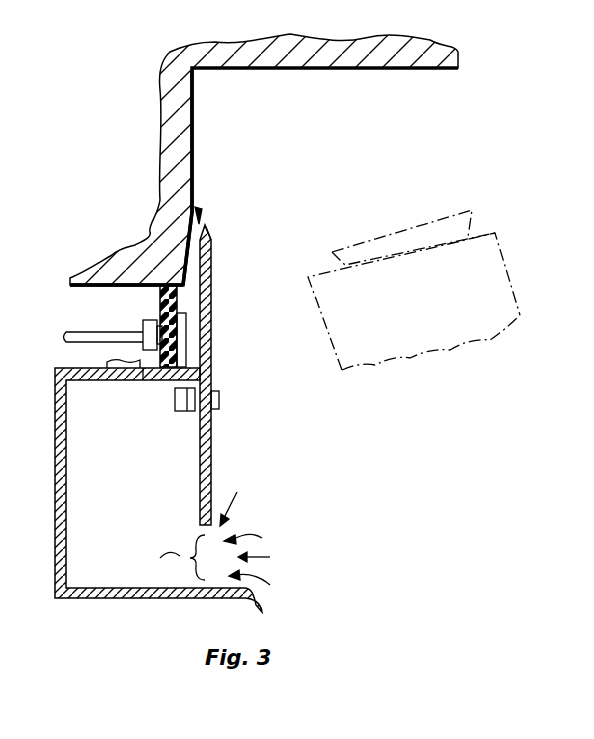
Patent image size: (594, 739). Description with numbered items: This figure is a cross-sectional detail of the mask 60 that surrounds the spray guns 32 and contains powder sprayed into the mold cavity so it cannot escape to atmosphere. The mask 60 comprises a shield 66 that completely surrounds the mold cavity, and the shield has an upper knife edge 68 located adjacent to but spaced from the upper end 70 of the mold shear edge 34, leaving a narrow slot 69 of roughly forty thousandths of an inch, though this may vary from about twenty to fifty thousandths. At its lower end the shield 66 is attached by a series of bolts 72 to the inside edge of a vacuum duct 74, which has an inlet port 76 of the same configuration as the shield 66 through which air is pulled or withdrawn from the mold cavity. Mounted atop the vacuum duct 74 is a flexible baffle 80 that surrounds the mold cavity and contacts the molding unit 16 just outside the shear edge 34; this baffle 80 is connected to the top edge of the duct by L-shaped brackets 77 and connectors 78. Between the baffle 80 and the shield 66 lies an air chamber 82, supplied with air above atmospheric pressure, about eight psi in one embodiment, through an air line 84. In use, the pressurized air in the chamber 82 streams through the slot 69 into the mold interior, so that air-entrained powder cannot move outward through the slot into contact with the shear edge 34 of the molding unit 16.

The molding unit 16 is at (455, 49).
The spray guns 32 is at (520, 233).
The mold shear edge 34 is at (188, 262).
The mask 60 is at (60, 650).
The shield 66 is at (213, 338).
The knife edge 68 is at (203, 223).
The slot 69 is at (200, 218).
The upper end of the mold shear edge 70 is at (187, 212).
The bolts 72 is at (220, 402).
The vacuum duct 74 is at (137, 516).
The inlet port 76 is at (211, 540).
The L-shaped brackets 77 is at (146, 381).
The connectors 78 is at (113, 381).
The flexible baffle 80 is at (179, 301).
The air chamber 82 is at (188, 323).
The air line 84 is at (80, 333).